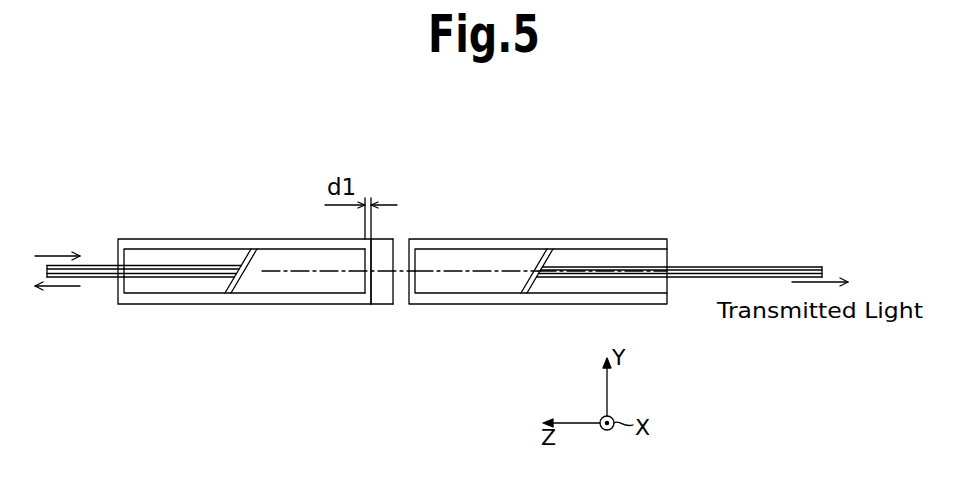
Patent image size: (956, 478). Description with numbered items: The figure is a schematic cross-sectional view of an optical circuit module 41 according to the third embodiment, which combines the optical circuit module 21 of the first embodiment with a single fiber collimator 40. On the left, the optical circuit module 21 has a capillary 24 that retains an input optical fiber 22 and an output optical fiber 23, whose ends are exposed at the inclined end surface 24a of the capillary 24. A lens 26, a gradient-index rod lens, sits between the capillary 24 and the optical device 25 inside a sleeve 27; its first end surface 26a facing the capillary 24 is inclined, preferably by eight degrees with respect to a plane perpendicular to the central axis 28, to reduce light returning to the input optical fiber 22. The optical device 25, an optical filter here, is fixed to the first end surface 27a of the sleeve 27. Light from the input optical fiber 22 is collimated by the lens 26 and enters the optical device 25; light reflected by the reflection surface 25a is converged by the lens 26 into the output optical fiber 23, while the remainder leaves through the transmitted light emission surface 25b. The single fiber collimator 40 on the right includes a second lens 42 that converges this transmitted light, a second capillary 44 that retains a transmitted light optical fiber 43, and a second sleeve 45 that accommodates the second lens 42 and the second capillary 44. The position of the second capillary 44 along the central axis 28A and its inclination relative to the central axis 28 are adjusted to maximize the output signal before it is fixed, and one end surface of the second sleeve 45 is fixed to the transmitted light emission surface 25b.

The optical circuit module 21 is at (317, 227).
The input optical fiber 22 is at (97, 262).
The output optical fiber 23 is at (97, 280).
The capillary 24 is at (168, 251).
The end surface of capillary 24a is at (252, 249).
The optical device 25 is at (387, 237).
The reflection surface 25a is at (362, 290).
The transmitted light emission surface 25b is at (398, 298).
The lens 26 is at (282, 258).
The first end surface of lens 26a is at (226, 290).
The sleeve 27 is at (306, 298).
The first end surface of sleeve 27a is at (376, 305).
The central axis 28 is at (262, 274).
The central axis 28A is at (483, 272).
The single fiber collimator 40 is at (467, 226).
The optical circuit module 41 is at (481, 128).
The second lens 42 is at (513, 258).
The transmitted light optical fiber 43 is at (645, 268).
The second capillary 44 is at (607, 260).
The second sleeve 45 is at (463, 298).